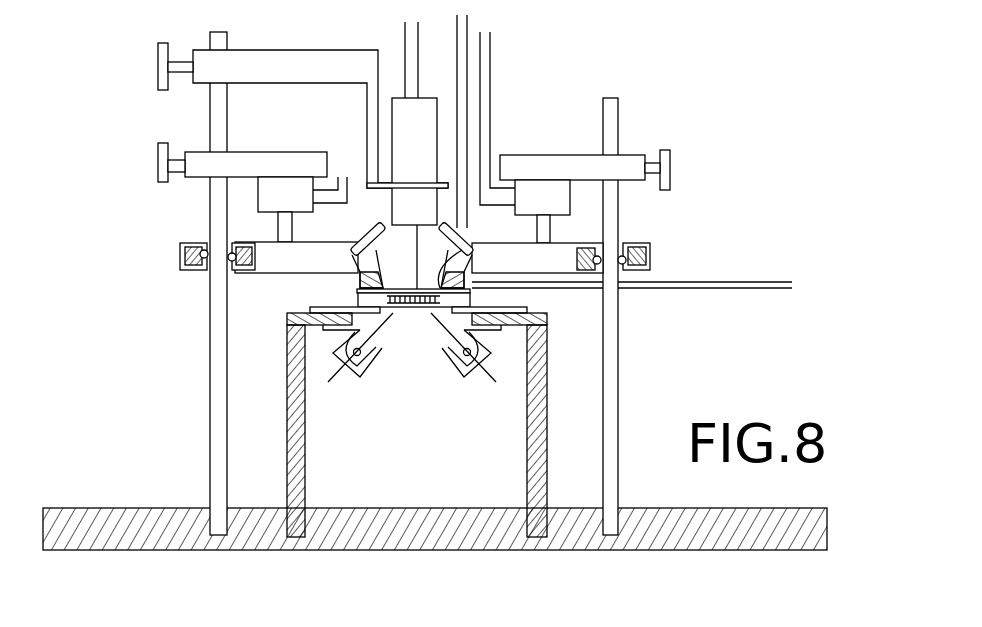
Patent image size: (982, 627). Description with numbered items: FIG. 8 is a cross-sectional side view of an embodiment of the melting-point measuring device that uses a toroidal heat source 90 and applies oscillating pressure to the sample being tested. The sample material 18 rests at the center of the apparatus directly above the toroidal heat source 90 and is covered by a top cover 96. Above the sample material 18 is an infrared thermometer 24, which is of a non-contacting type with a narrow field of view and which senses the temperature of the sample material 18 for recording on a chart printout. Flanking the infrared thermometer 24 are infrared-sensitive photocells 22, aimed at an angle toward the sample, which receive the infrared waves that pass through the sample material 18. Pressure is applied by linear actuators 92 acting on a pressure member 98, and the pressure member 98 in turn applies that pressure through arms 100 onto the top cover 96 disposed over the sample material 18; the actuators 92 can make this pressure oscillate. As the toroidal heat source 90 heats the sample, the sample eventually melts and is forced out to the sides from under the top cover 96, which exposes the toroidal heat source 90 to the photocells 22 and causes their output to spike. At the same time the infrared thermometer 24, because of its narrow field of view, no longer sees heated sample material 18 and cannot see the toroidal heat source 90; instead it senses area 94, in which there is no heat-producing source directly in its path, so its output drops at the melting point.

The sample material 18 is at (412, 310).
The infrared-sensitive photocells 22 is at (367, 237).
The infrared thermometer 24 is at (398, 108).
The toroidal heat source 90 is at (465, 380).
The linear actuators 92 is at (285, 186).
The area 94 is at (485, 103).
The top cover 96 is at (463, 242).
The pressure member 98 is at (258, 250).
The arms 100 is at (353, 278).